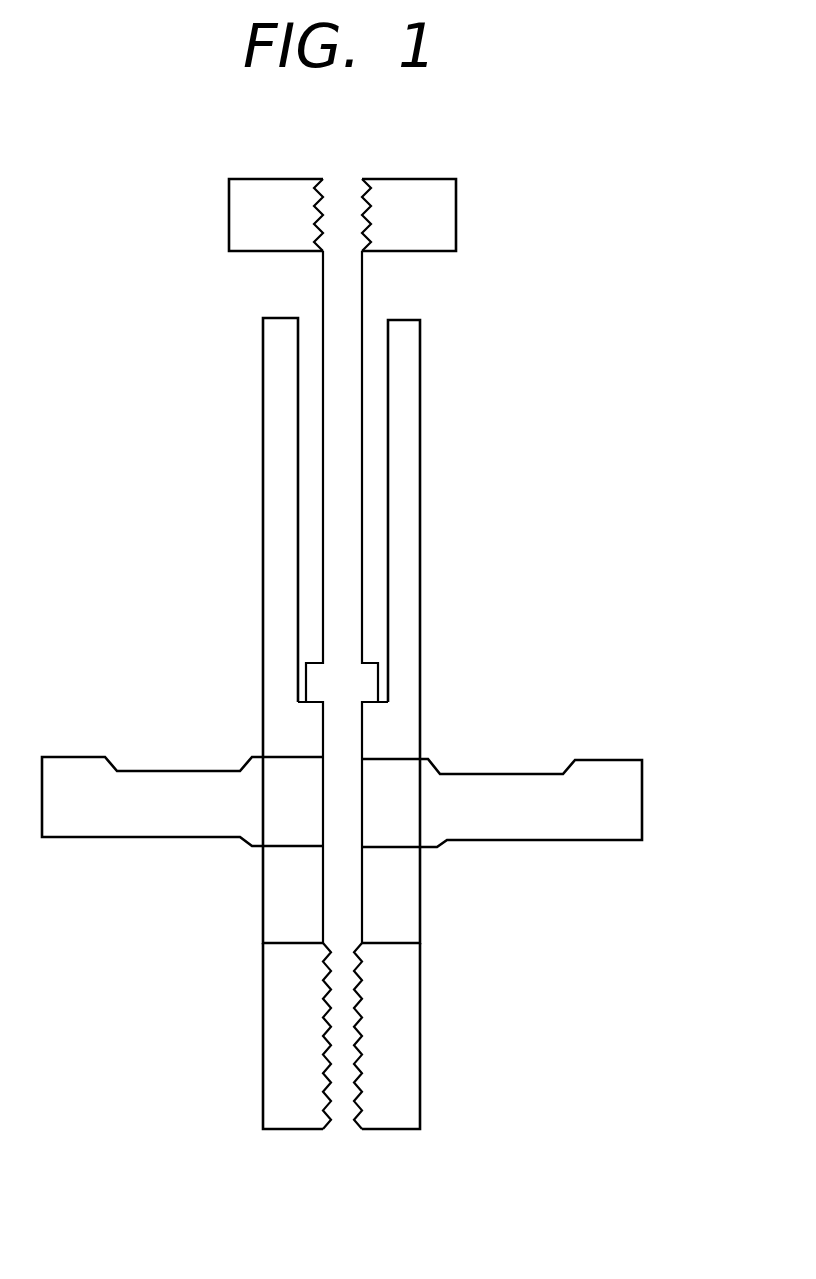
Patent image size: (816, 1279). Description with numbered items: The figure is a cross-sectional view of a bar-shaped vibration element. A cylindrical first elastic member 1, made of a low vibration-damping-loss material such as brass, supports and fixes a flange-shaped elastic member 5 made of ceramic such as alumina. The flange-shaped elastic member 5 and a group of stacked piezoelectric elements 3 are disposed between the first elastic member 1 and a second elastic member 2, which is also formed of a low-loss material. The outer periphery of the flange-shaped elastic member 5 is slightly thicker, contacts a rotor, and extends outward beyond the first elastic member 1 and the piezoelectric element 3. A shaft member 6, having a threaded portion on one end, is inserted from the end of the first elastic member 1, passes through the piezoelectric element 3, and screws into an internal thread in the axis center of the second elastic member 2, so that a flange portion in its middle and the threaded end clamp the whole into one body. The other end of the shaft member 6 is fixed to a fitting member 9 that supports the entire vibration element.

The fitting member 9 is at (436, 216).
The first elastic member 1 is at (407, 459).
The flange-shaped elastic member 5 is at (623, 802).
The piezoelectric element 3 is at (407, 900).
The second elastic member 2 is at (407, 1030).
The shaft member 6 is at (341, 1118).